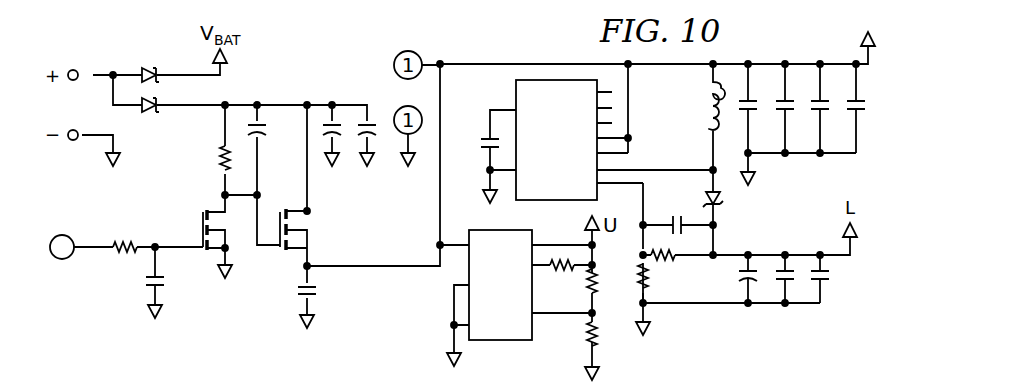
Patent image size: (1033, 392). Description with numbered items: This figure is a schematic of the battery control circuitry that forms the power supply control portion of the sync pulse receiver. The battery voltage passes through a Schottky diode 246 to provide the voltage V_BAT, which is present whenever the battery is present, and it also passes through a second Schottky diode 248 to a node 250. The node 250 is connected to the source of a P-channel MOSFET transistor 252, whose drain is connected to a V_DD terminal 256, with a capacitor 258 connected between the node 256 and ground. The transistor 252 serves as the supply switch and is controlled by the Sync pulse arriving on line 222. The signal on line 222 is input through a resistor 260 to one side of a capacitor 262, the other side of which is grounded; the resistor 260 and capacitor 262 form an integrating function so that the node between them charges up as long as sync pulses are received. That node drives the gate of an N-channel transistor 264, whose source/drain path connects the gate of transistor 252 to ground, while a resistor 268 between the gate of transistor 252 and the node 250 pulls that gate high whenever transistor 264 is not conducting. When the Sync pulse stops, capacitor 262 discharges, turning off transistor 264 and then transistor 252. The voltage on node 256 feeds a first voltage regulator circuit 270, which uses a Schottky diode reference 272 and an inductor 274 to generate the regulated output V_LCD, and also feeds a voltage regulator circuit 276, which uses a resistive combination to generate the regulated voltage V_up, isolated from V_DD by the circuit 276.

The line 222 is at (74, 257).
The Schottky diode 246 is at (150, 66).
The second Schottky diode 248 is at (150, 113).
The node 250 is at (257, 102).
The P-channel MOSFET transistor 252 is at (304, 210).
The V_DD terminal 256 is at (441, 60).
The capacitor 258 is at (318, 291).
The resistor 260 is at (120, 244).
The capacitor 262 is at (160, 253).
The N-channel transistor 264 is at (200, 222).
The resistor 268 is at (222, 165).
The first voltage regulator circuit 270 is at (614, 140).
The Schottky diode reference 272 is at (722, 200).
The inductor 274 is at (706, 108).
The voltage regulator circuit 276 is at (500, 285).